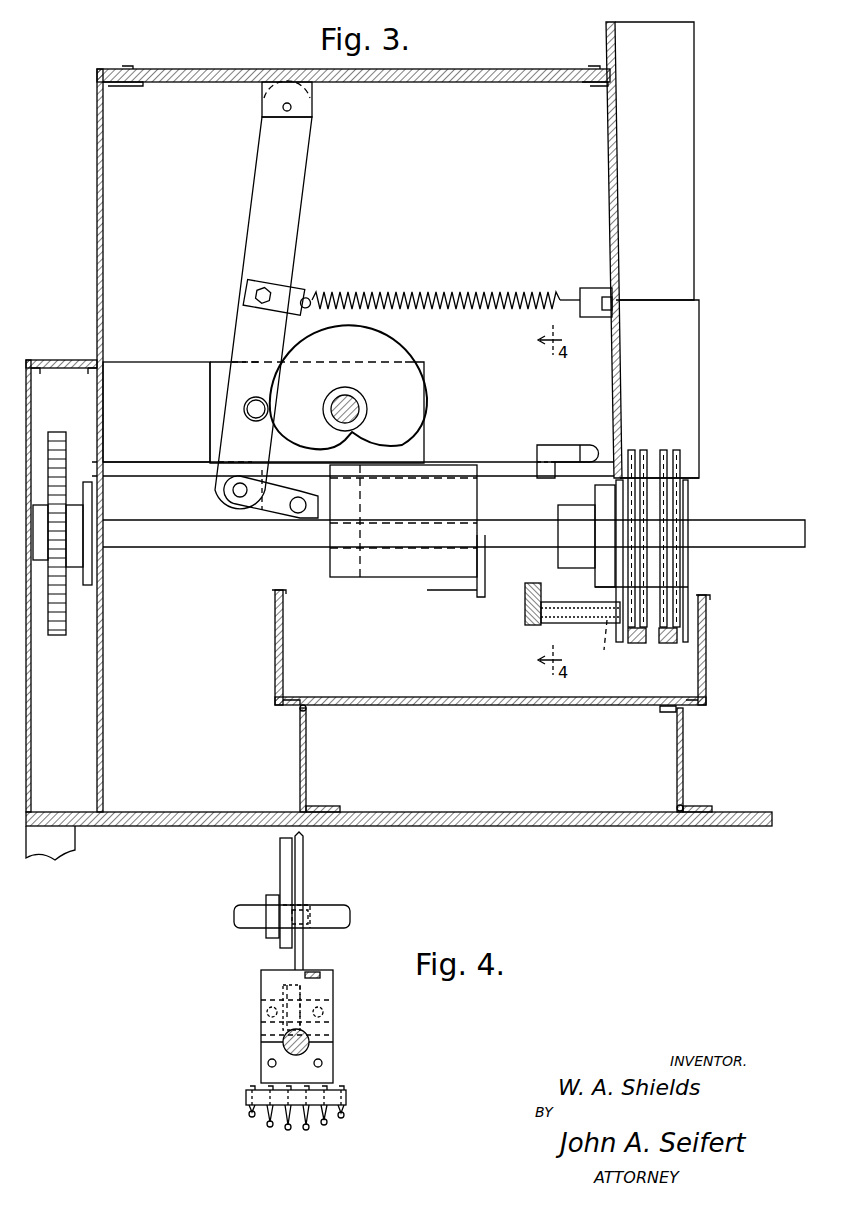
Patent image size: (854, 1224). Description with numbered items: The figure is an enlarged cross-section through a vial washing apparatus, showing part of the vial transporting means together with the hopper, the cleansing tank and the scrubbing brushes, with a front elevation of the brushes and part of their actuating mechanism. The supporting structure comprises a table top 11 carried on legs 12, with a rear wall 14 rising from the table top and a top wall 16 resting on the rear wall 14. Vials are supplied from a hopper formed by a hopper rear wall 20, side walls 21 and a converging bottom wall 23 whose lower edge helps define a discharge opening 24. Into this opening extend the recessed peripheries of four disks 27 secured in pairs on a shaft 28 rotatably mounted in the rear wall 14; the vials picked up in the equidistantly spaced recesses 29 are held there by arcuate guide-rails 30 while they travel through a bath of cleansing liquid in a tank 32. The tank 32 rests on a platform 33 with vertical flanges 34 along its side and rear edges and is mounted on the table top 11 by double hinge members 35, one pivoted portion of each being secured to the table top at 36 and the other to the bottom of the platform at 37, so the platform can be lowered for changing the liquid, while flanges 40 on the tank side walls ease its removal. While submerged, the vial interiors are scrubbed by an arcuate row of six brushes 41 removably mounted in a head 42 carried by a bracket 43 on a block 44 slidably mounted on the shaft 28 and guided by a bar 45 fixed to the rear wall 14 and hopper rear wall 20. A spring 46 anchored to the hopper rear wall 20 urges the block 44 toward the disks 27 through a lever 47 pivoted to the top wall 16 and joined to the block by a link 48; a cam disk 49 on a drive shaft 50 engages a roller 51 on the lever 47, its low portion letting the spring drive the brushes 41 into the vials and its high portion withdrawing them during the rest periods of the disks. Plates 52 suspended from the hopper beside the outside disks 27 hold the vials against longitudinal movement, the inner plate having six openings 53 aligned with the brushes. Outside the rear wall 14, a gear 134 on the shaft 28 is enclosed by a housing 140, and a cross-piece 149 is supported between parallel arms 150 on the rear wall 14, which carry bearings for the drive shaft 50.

In FIG. 3, the table top 11 is at (610, 826).
In FIG. 3, the legs 12 is at (58, 860).
In FIG. 3, the rear wall 14 is at (97, 243).
In FIG. 3, the top wall 16 is at (444, 69).
In FIG. 3, the hopper rear wall 20 is at (606, 160).
In FIG. 3, the side walls 21 is at (680, 40).
In FIG. 3, the bottom wall 23 is at (688, 330).
In FIG. 3, the discharge opening 24 is at (696, 456).
In FIG. 3, the disks 27 is at (680, 510).
In FIG. 3, the shaft 28 is at (185, 535).
In FIG. 4, the shaft 28 is at (283, 1040).
In FIG. 3, the recesses 29 is at (678, 450).
In FIG. 3, the guide-rails 30 is at (668, 643).
In FIG. 3, the tank 32 is at (276, 650).
In FIG. 3, the platform 33 is at (696, 705).
In FIG. 3, the vertical flanges 34 is at (276, 700).
In FIG. 3, the double hinge members 35 is at (300, 760).
In FIG. 3, the pivoted portion secured to table top 36 is at (322, 806).
In FIG. 3, the pivoted portion secured to platform 37 is at (296, 712).
In FIG. 3, the flanges 40 is at (275, 594).
In FIG. 3, the brushes 41 is at (592, 620).
In FIG. 4, the brushes 41 is at (330, 1126).
In FIG. 3, the head 42 is at (525, 614).
In FIG. 4, the head 42 is at (346, 1098).
In FIG. 3, the bracket 43 is at (480, 597).
In FIG. 4, the bracket 43 is at (320, 1075).
In FIG. 3, the block 44 is at (330, 560).
In FIG. 4, the block 44 is at (333, 988).
In FIG. 3, the bar 45 is at (498, 470).
In FIG. 4, the bar 45 is at (316, 972).
In FIG. 3, the spring 46 is at (468, 292).
In FIG. 3, the lever 47 is at (292, 186).
In FIG. 4, the lever 47 is at (300, 866).
In FIG. 3, the link 48 is at (268, 508).
In FIG. 4, the link 48 is at (283, 988).
In FIG. 3, the cam disk 49 is at (425, 408).
In FIG. 4, the cam disk 49 is at (280, 858).
In FIG. 3, the drive shaft 50 is at (345, 423).
In FIG. 4, the drive shaft 50 is at (250, 908).
In FIG. 3, the roller 51 is at (244, 409).
In FIG. 4, the roller 51 is at (276, 938).
In FIG. 3, the plates 52 is at (690, 584).
In FIG. 3, the openings 53 is at (595, 646).
In FIG. 3, the gear 134 is at (57, 635).
In FIG. 3, the housing 140 is at (70, 360).
In FIG. 3, the cross-piece 149 is at (210, 362).
In FIG. 3, the arms 150 is at (143, 372).